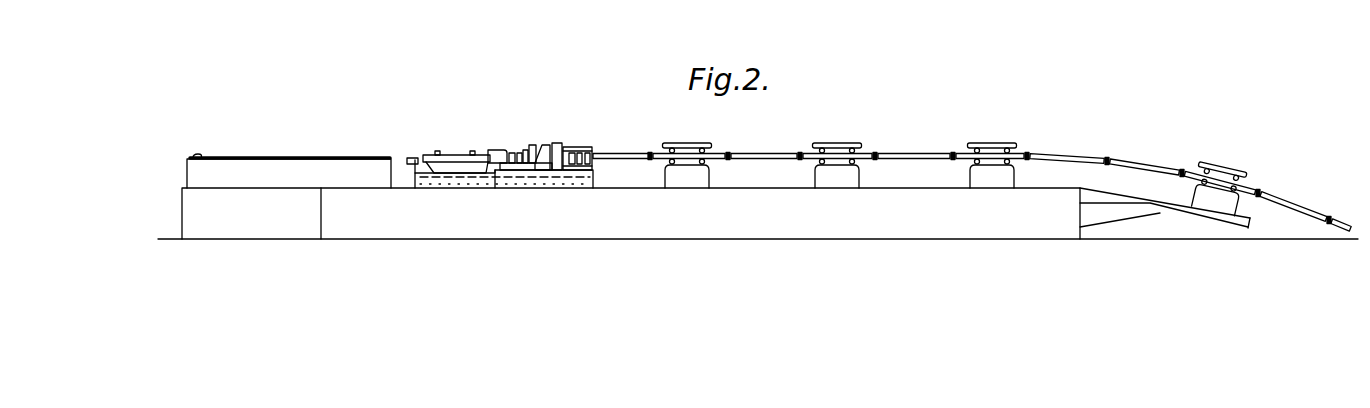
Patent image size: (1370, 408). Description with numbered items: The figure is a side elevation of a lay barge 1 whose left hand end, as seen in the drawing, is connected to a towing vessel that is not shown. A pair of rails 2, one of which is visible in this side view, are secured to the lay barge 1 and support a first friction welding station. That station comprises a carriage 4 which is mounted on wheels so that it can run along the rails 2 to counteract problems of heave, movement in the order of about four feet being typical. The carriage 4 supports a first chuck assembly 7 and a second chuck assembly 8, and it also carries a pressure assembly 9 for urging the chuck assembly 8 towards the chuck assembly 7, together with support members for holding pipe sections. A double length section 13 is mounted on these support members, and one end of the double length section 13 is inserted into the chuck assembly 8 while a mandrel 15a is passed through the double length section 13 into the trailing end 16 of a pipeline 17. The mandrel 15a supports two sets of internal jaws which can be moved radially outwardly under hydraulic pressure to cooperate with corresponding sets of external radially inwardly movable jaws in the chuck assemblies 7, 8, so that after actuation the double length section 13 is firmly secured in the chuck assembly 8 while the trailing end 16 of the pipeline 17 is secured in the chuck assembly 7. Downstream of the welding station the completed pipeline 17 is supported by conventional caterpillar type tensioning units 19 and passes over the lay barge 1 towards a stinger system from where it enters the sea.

The lay barge 1 is at (917, 230).
The rails 2 is at (462, 190).
The carriage 4 is at (577, 177).
The first chuck assembly 7 is at (591, 132).
The second chuck assembly 8 is at (558, 130).
The pressure assembly 9 is at (538, 133).
The double length section 13 is at (448, 155).
The mandrel 15a is at (322, 156).
The trailing end 16 is at (615, 152).
The pipeline 17 is at (763, 152).
The caterpillar type tensioning units 19 is at (832, 176).